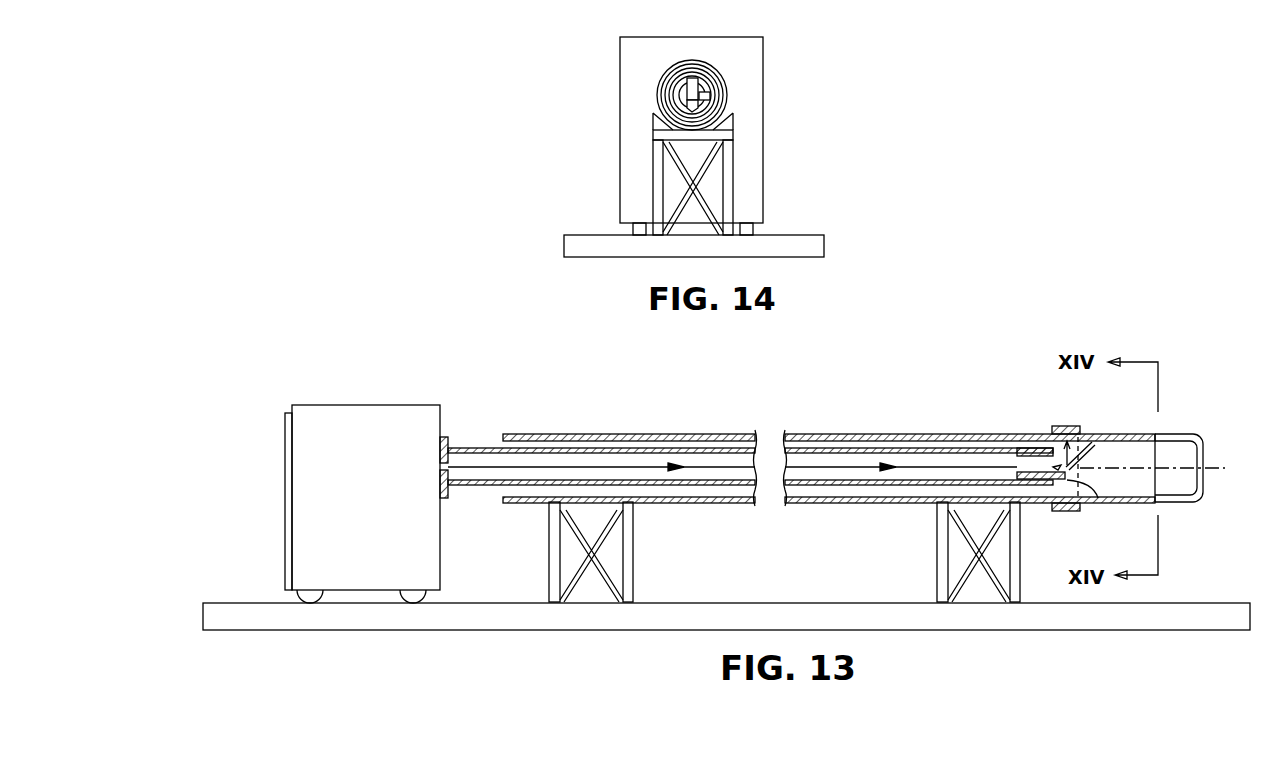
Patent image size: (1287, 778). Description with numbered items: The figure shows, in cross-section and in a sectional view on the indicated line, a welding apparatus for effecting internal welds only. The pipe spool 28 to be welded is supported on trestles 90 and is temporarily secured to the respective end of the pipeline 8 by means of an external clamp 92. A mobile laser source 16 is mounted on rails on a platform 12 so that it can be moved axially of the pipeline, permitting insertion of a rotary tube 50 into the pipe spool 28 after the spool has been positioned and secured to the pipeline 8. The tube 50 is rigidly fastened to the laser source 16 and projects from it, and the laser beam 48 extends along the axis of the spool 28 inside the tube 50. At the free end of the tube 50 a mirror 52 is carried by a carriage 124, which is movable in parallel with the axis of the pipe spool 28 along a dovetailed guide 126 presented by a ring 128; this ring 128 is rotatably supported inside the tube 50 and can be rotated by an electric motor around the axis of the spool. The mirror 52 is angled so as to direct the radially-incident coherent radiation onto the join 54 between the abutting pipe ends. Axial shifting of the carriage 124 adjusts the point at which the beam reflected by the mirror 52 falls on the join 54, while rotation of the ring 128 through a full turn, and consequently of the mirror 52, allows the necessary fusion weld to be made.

In FIG. 13, the pipeline 8 is at (1137, 497).
In FIG. 14, the platform 12 is at (780, 243).
In FIG. 13, the platform 12 is at (787, 604).
In FIG. 14, the mobile laser source 16 is at (640, 50).
In FIG. 13, the mobile laser source 16 is at (433, 410).
In FIG. 14, the pipe spool 28 is at (713, 75).
In FIG. 13, the pipe spool 28 is at (677, 503).
In FIG. 13, the laser beam 48 is at (520, 467).
In FIG. 14, the rotary tube 50 is at (676, 88).
In FIG. 13, the rotary tube 50 is at (474, 448).
In FIG. 14, the mirror 52 is at (693, 78).
In FIG. 13, the mirror 52 is at (1082, 440).
In FIG. 13, the join 54 is at (1099, 498).
In FIG. 14, the trestles 90 is at (655, 147).
In FIG. 13, the trestles 90 is at (551, 538).
In FIG. 13, the external clamp 92 is at (1060, 511).
In FIG. 14, the carriage 124 is at (703, 103).
In FIG. 13, the carriage 124 is at (1037, 470).
In FIG. 14, the dovetailed guide 126 is at (680, 112).
In FIG. 14, the ring 128 is at (712, 96).
In FIG. 13, the ring 128 is at (1005, 458).